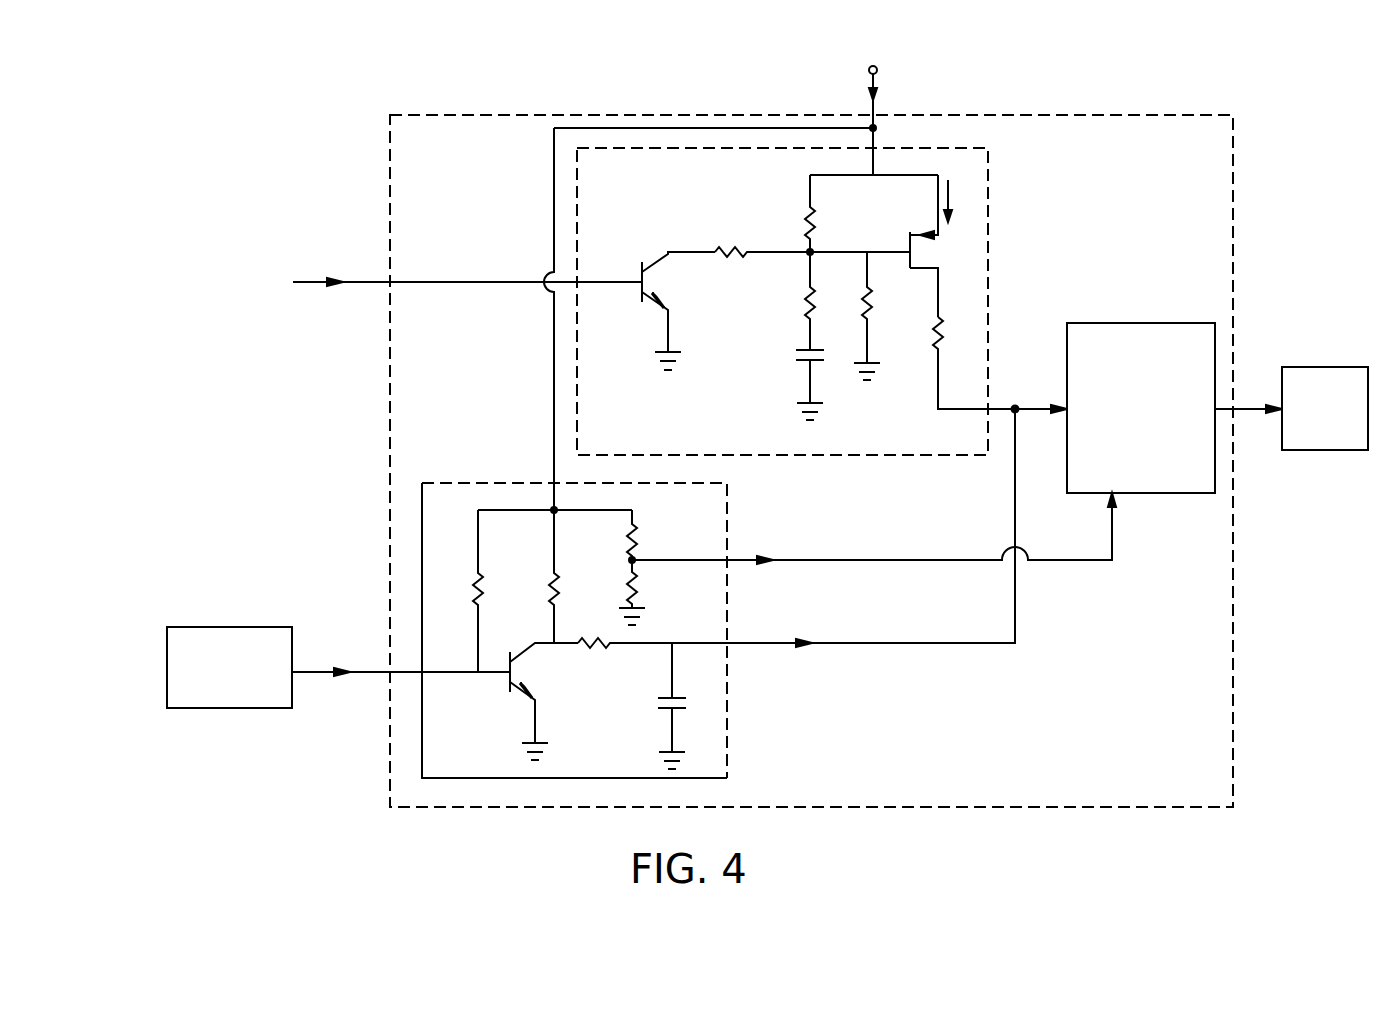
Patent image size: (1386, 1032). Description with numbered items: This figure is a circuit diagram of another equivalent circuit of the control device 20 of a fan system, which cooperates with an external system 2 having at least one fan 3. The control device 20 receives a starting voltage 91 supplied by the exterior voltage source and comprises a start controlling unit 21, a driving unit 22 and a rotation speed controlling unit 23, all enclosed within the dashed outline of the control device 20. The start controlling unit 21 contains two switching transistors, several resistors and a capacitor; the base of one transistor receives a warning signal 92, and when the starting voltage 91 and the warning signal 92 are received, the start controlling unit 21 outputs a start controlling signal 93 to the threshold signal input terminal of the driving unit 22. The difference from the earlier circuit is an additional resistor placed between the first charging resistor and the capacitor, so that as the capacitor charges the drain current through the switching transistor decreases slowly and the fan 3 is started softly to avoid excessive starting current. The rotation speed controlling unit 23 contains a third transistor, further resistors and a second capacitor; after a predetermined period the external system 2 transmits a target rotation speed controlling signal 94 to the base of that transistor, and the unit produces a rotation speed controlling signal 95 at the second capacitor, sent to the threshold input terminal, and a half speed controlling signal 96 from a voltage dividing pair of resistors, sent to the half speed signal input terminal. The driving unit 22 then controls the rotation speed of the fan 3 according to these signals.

The external system 2 is at (270, 627).
The fan 3 is at (1325, 367).
The control device 20 is at (1142, 795).
The start controlling unit 21 is at (990, 156).
The driving unit 22 is at (1088, 330).
The rotation speed controlling unit 23 is at (575, 790).
The starting voltage 91 is at (877, 92).
The warning signal 92 is at (305, 283).
The start controlling signal 93 is at (995, 408).
The target rotation speed controlling signal 94 is at (320, 672).
The rotation speed controlling signal 95 is at (780, 643).
The half speed controlling signal 96 is at (745, 560).